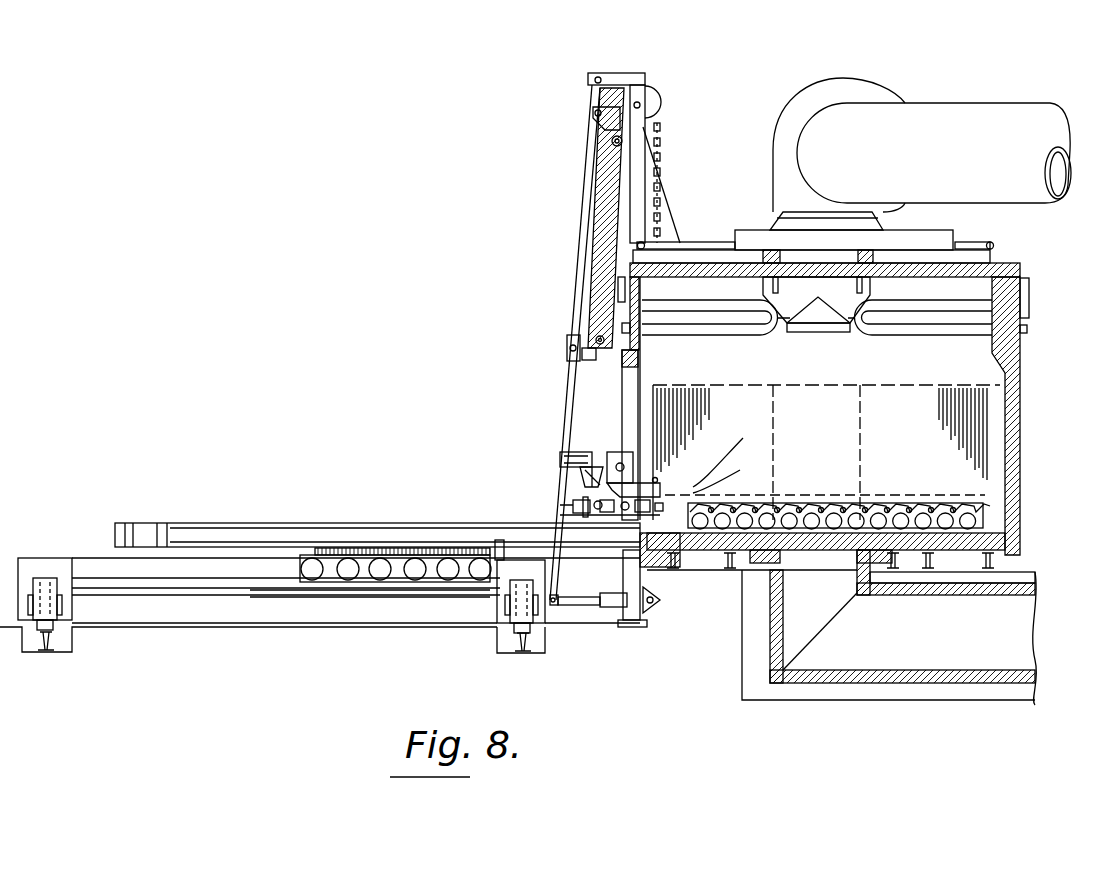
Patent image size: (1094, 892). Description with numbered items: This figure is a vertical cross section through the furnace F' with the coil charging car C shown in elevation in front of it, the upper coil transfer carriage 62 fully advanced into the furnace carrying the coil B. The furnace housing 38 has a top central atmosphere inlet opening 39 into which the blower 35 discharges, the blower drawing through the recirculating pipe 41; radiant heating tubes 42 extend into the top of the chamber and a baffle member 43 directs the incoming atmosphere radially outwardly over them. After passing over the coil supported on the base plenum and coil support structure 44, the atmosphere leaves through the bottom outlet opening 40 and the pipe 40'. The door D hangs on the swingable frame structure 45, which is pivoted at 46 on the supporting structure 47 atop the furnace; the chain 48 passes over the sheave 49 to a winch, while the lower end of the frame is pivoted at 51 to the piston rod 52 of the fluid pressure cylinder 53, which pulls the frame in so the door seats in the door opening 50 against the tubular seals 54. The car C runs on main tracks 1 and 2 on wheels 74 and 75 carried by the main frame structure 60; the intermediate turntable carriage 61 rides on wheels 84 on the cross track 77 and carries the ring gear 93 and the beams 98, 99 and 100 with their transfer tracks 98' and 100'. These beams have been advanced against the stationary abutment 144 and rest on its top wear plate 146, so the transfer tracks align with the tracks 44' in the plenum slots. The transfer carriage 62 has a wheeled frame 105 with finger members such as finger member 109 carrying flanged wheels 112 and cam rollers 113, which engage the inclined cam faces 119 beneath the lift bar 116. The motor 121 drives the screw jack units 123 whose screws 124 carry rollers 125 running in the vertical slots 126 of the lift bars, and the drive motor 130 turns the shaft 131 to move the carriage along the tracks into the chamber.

The pivot 46 is at (600, 77).
The supporting structure 47 is at (641, 159).
The sheave 49 is at (663, 96).
The chain 48 is at (662, 128).
The furnace door D is at (598, 211).
The swingable frame structure 45 is at (576, 283).
The resilient seals 54 is at (605, 141).
The blower 35 is at (870, 88).
The recirculating pipe 41 is at (970, 116).
The atmosphere inlet opening 39 is at (822, 268).
The furnace F' is at (1035, 247).
The furnace housing 38 is at (1020, 393).
The furnace door opening 50 is at (631, 384).
The radiant heating tubes 42 is at (719, 305).
The baffle member 43 is at (823, 301).
The coil B is at (845, 385).
The finger member 109 is at (983, 521).
The coil lift bar 116 is at (990, 503).
The flanged wheels 112 is at (973, 522).
The cam rollers 113 is at (880, 488).
The base plenum and coil support structure 44 is at (902, 444).
The inclined cam faces 119 is at (785, 490).
The vertical slots 126 is at (727, 453).
The rollers 125 is at (732, 474).
The drive motor 130 is at (580, 451).
The vertical axis electric drive motor 121 is at (587, 473).
The transverse shaft 131 is at (630, 464).
The upper coil transfer carriage 62 is at (655, 479).
The screw jack units 123 is at (577, 533).
The threaded screw members 124 is at (623, 531).
The wheeled frame 105 is at (673, 526).
The atmosphere outlet opening 40 is at (889, 623).
The tracks 44' is at (811, 590).
The outlet pipe 40' is at (902, 695).
The transfer car track supporting beam 100 is at (377, 520).
The transfer track 100' is at (305, 511).
The transfer car track supporting beam 98 is at (119, 535).
The transfer track 98' is at (107, 509).
The transfer car track supporting beam 99 is at (143, 533).
The main frame structure 60 is at (40, 556).
The wheels 74 is at (55, 633).
The main track 1 is at (55, 645).
The cross track 77 is at (120, 587).
The intermediate turntable carriage 61 is at (299, 568).
The wheels 84 is at (407, 581).
The coil charging car C is at (240, 622).
The ring gear 93 is at (497, 545).
The wheels 75 is at (505, 633).
The main track 2 is at (512, 648).
The pivot 51 is at (553, 606).
The piston rod 52 is at (585, 607).
The fluid pressure cylinder 53 is at (609, 611).
The top wear plate 146 is at (607, 552).
The stationary abutment 144 is at (633, 590).